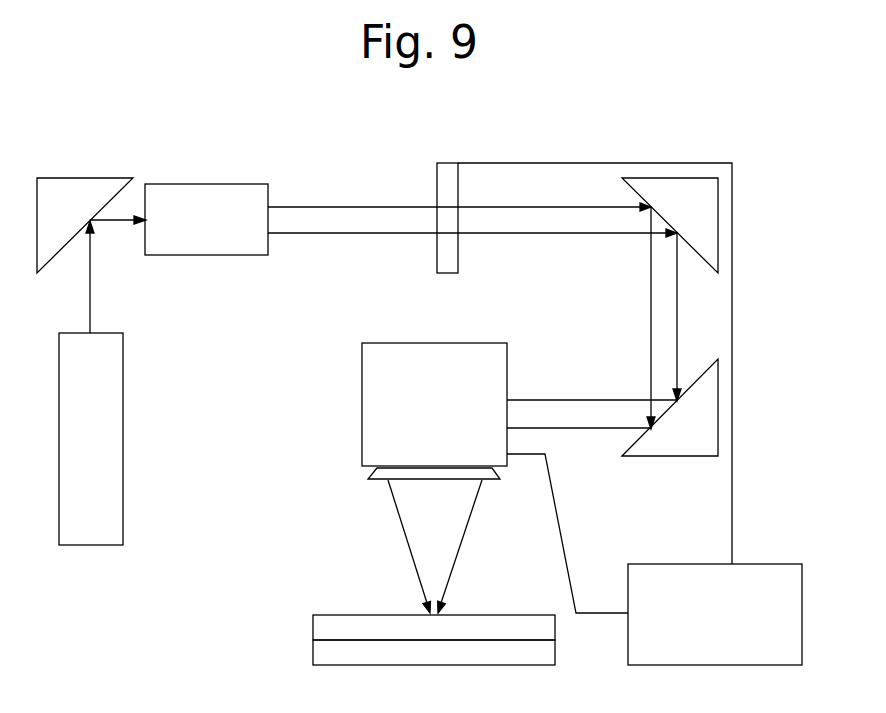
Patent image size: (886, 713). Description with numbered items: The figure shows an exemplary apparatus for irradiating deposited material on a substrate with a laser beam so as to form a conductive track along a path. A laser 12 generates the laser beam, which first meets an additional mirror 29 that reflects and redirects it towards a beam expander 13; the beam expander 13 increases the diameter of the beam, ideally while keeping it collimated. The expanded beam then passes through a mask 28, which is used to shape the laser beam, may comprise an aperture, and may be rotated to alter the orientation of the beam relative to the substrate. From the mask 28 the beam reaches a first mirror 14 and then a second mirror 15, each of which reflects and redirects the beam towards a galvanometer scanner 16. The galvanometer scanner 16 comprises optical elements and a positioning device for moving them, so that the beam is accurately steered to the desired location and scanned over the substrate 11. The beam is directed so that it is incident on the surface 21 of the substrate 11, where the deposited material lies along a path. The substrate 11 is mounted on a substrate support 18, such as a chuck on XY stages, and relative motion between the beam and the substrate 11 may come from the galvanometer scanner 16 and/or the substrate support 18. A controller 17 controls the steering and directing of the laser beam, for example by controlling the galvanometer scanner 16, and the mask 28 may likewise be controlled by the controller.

The additional mirror 29 is at (80, 186).
The laser 12 is at (107, 458).
The beam expander 13 is at (197, 196).
The mask 28 is at (437, 170).
The first mirror 14 is at (702, 213).
The second mirror 15 is at (703, 408).
The galvanometer scanner 16 is at (375, 384).
The surface 21 is at (355, 612).
The substrate 11 is at (328, 625).
The substrate support 18 is at (338, 653).
The controller 17 is at (667, 568).